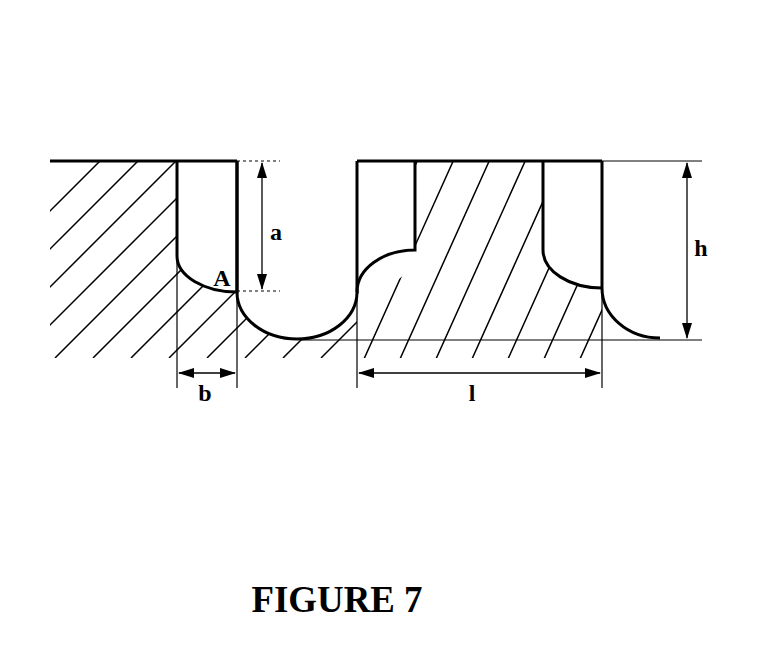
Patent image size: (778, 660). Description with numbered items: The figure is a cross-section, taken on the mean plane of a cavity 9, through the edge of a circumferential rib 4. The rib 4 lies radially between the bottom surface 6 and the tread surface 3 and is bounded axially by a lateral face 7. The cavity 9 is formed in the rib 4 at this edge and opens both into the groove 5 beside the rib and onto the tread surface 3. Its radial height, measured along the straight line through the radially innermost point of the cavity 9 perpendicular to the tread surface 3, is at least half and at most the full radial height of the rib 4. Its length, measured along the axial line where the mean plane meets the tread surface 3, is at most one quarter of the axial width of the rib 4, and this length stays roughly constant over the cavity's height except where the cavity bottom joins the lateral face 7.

The tread surface 3 is at (441, 159).
The circumferential rib 4 is at (120, 202).
The groove 5 is at (297, 203).
The bottom surface 6 is at (333, 342).
The lateral face 7 is at (355, 238).
The cavity 9 is at (210, 190).